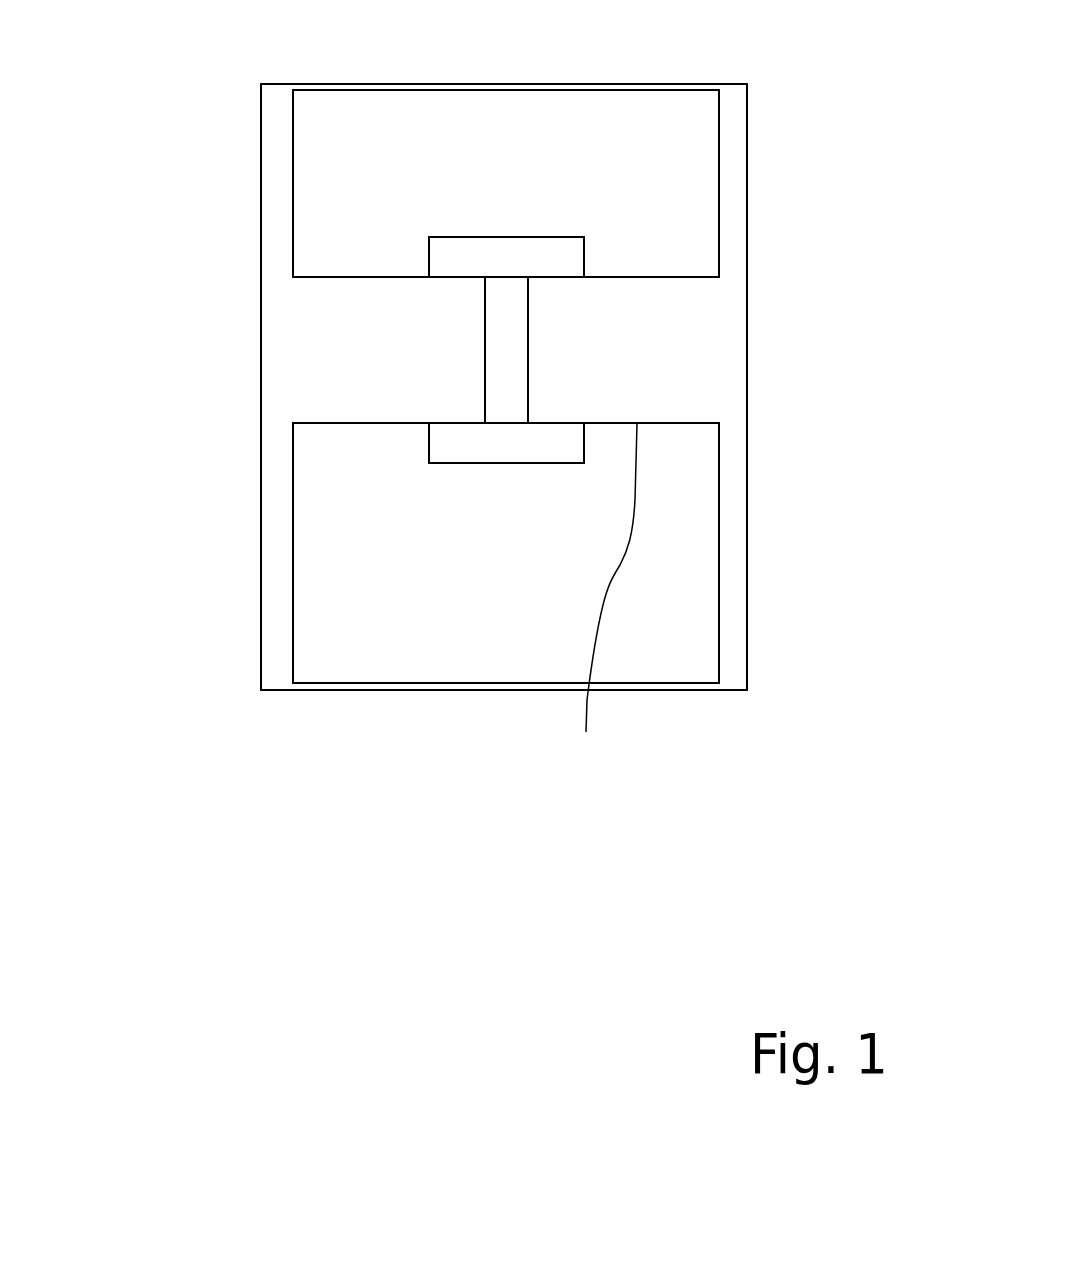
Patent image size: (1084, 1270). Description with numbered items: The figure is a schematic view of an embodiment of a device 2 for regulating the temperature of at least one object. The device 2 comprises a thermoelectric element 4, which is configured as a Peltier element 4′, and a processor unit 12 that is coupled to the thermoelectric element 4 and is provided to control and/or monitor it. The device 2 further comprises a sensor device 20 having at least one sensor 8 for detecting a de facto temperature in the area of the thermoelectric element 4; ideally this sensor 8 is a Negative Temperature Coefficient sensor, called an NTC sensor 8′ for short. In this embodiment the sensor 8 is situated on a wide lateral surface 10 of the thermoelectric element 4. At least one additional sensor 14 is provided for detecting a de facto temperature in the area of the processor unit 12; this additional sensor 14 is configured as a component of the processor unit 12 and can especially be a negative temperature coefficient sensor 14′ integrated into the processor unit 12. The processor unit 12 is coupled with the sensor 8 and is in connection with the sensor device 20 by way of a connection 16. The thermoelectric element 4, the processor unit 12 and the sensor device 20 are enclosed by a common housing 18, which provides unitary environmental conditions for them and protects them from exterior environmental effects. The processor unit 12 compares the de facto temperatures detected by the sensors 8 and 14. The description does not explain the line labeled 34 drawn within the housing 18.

The device for regulating the temperature 2 is at (501, 489).
The thermoelectric element 4 is at (596, 160).
The Peltier element 4′ is at (719, 132).
The sensor 8 is at (694, 228).
The NTC sensor 8′ is at (584, 257).
The wide lateral surface 10 is at (702, 277).
The processor unit 12 is at (719, 595).
The additional sensor 14 is at (313, 457).
The negative temperature coefficient sensor 14′ is at (429, 436).
The connection 16 is at (528, 372).
The housing 18 is at (276, 690).
The sensor device 20 is at (501, 335).
The boundary line 34 is at (602, 602).